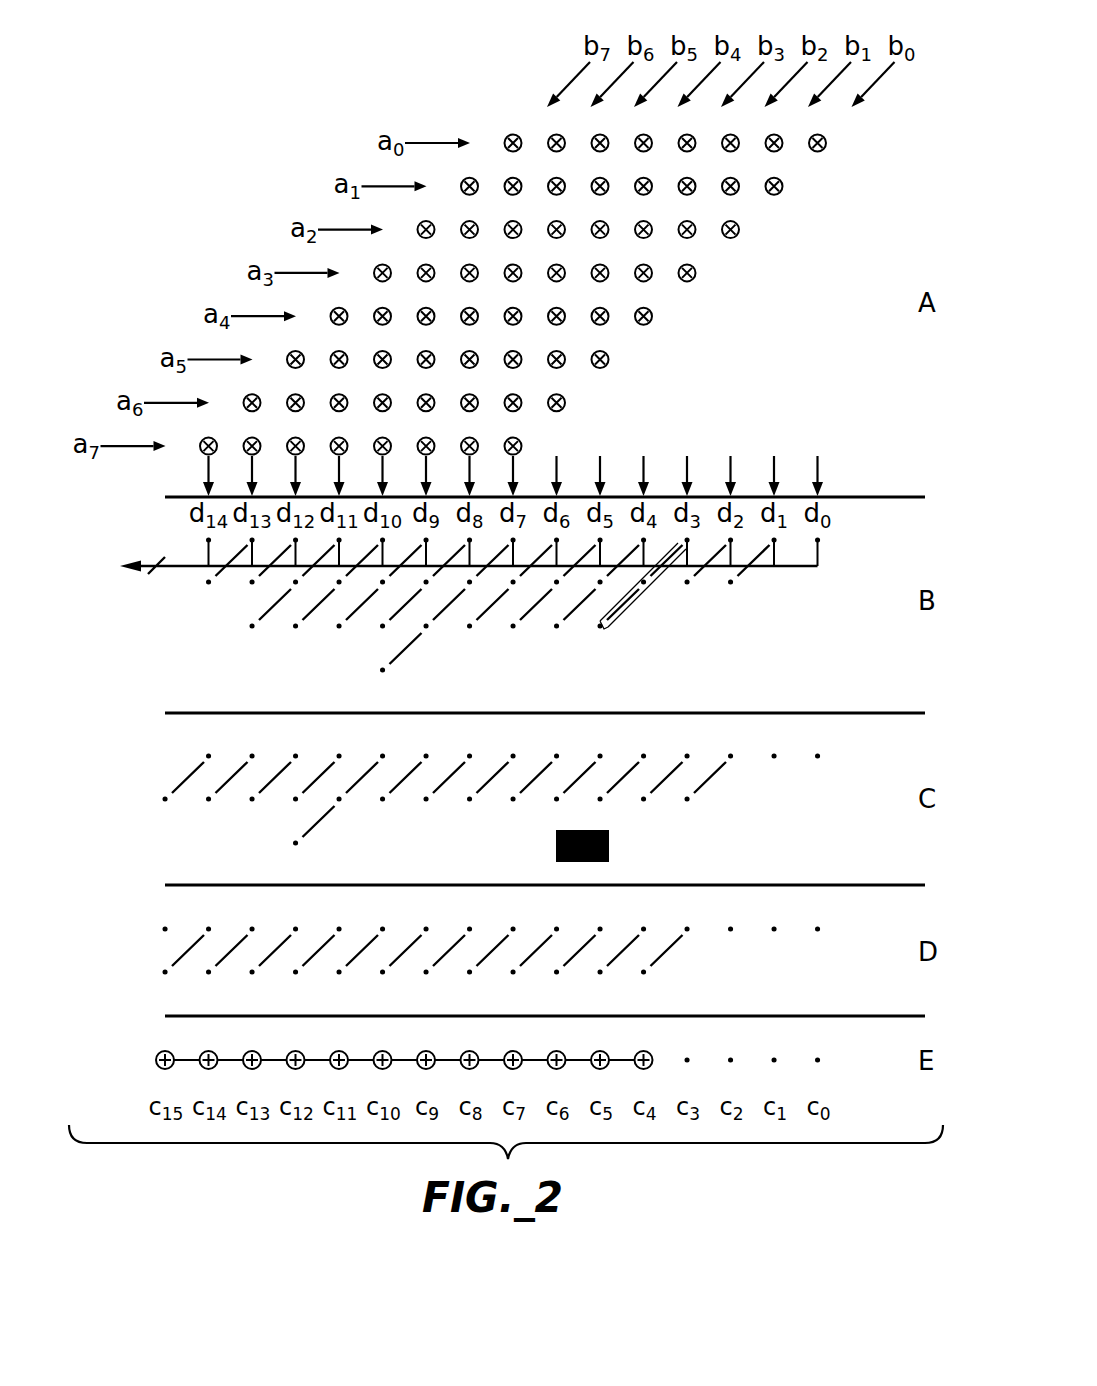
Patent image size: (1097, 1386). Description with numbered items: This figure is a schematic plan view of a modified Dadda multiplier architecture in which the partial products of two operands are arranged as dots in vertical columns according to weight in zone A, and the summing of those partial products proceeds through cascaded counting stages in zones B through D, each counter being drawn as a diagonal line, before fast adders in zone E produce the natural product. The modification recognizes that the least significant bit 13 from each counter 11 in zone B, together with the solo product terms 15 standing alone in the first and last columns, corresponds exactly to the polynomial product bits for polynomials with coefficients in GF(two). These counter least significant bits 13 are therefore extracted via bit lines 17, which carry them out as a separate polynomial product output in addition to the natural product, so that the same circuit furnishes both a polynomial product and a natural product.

The counter 11 is at (646, 589).
The least significant bit 13 is at (778, 541).
The solo product terms 15 is at (203, 538).
The bit lines 17 is at (182, 568).